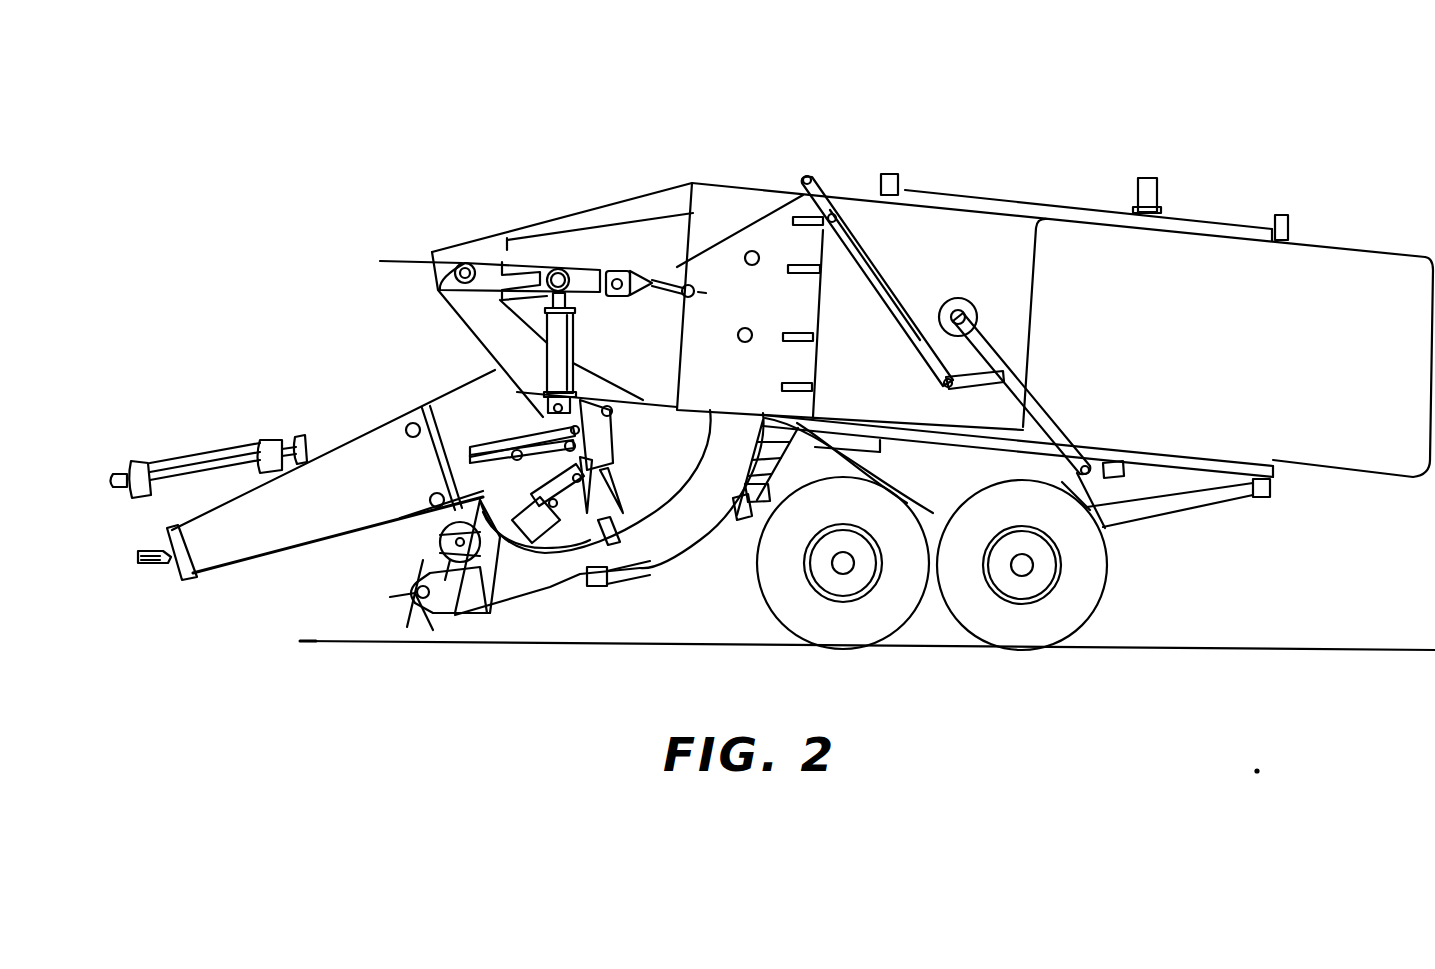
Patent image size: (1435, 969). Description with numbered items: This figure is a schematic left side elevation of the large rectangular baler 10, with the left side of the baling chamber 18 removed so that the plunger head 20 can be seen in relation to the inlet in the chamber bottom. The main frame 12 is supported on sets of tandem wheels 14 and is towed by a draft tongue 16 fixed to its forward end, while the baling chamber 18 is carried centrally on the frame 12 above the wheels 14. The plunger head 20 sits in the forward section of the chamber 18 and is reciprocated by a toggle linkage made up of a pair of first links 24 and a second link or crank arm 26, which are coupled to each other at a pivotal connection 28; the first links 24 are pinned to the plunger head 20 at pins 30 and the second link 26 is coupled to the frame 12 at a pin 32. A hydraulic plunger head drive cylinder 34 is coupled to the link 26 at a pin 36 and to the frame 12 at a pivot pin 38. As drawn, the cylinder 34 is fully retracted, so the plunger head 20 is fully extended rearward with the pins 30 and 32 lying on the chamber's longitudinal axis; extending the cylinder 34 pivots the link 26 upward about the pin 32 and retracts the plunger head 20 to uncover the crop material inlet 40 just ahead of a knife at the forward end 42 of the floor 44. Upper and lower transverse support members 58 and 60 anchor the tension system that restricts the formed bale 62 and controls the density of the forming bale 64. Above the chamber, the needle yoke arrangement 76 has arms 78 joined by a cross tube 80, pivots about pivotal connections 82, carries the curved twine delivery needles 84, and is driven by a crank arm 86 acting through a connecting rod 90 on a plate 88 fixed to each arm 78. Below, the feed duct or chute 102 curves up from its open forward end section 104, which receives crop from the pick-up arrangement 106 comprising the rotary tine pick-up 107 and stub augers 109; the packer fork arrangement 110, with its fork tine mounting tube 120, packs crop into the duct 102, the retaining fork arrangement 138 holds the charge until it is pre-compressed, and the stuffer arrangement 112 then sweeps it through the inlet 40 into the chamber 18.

The large rectangular baler 10 is at (362, 340).
The main frame 12 is at (460, 323).
The tandem wheels 14 is at (977, 641).
The draft tongue 16 is at (385, 425).
The baling chamber 18 is at (1078, 226).
The plunger head 20 is at (735, 227).
The first links 24 is at (657, 297).
The second link or crank arm 26 is at (592, 268).
The pivotal connection 28 is at (613, 297).
The pins 30 is at (690, 300).
The pin 32 is at (464, 262).
The hydraulic plunger head drive cylinder 34 is at (547, 356).
The pin 36 is at (559, 268).
The pivot pin 38 is at (547, 415).
The crop material inlet 40 is at (733, 406).
The forward end 42 is at (775, 420).
The bottom wall or floor 44 is at (1020, 457).
The upper transverse support member 58 is at (1160, 188).
The lower transverse support member 60 is at (1115, 478).
The formed bale 62 is at (1331, 478).
The forming bale 64 is at (975, 273).
The needle yoke arrangement 76 is at (1040, 362).
The arms 78 is at (1040, 397).
The cross tube 80 is at (1102, 457).
The pivotal connections 82 is at (963, 305).
The twine delivery needles 84 is at (932, 562).
The crank arm 86 is at (829, 190).
The plate 88 is at (982, 385).
The connecting rod 90 is at (868, 252).
The feed duct or chute 102 is at (705, 549).
The open forward end section 104 is at (560, 572).
The pick-up arrangement 106 is at (395, 610).
The rotary tine pick-up 107 is at (410, 583).
The stub augers 109 is at (440, 545).
The packer fork arrangement 110 is at (540, 476).
The stuffer arrangement 112 is at (620, 428).
The fork tine mounting tube 120 is at (637, 567).
The retaining fork arrangement 138 is at (798, 470).